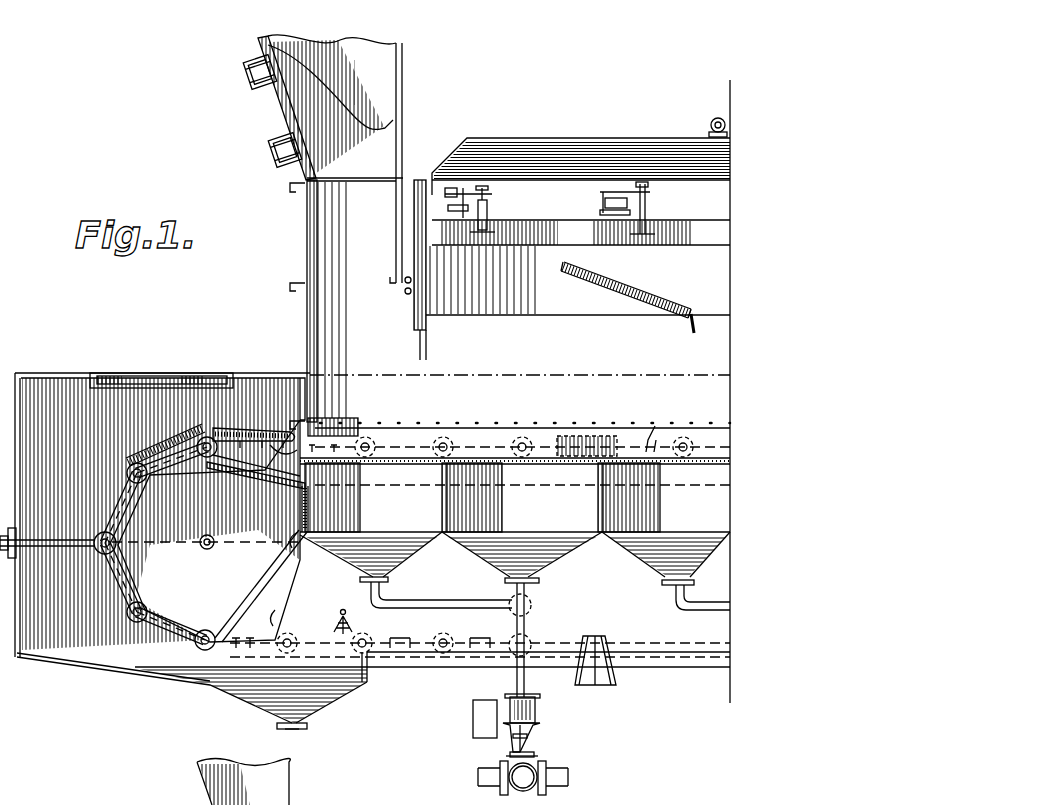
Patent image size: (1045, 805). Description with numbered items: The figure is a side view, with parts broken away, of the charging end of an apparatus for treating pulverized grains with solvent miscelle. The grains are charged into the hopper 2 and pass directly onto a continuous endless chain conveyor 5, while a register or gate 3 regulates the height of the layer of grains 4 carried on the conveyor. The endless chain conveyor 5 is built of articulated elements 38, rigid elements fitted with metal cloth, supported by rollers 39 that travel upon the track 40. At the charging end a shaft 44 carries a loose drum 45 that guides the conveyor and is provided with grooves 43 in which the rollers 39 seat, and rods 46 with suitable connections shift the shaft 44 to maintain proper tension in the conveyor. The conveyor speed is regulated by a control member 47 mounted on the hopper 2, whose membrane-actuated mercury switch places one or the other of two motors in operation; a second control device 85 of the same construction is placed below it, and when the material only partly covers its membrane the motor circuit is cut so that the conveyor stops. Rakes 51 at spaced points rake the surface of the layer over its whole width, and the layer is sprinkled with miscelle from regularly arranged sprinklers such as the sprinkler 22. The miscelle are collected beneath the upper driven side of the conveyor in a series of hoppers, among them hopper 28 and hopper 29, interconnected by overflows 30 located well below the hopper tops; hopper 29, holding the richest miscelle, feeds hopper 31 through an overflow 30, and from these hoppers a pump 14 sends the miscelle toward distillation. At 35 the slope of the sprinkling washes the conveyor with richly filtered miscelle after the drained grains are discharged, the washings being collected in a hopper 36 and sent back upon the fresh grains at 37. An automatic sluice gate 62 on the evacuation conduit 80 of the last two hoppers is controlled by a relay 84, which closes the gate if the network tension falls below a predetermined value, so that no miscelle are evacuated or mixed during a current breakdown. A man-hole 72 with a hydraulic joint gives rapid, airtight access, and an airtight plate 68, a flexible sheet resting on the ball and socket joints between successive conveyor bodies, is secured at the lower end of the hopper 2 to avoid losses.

The hopper 2 is at (393, 120).
The register or gate 3 is at (426, 265).
The layer of grains 4 is at (470, 332).
The endless chain conveyor 5 is at (470, 447).
The pump 14 is at (533, 607).
The vaporizer or sprinkler 22 is at (650, 209).
The hopper 28 is at (656, 555).
The hopper 29 is at (503, 548).
The overflow 30 is at (449, 507).
The hopper 31 is at (358, 552).
The washing sprinkling slope 35 is at (340, 613).
The hopper 36 is at (318, 700).
The return point for miscelle 37 is at (488, 207).
The articulated element 38 is at (646, 455).
The roller 39 is at (128, 477).
The track 40 is at (380, 486).
The groove 43 is at (278, 600).
The shaft 44 is at (213, 540).
The loose drum 45 is at (206, 601).
The rod 46 is at (55, 543).
The control member 47 is at (248, 70).
The rake 51 is at (626, 288).
The automatic sluice gate 62 is at (538, 760).
The airtight plate 68 is at (248, 438).
The man-hole 72 is at (150, 365).
The evacuation conduit 80 is at (516, 678).
The relay 84 is at (474, 728).
The second control device 85 is at (280, 150).